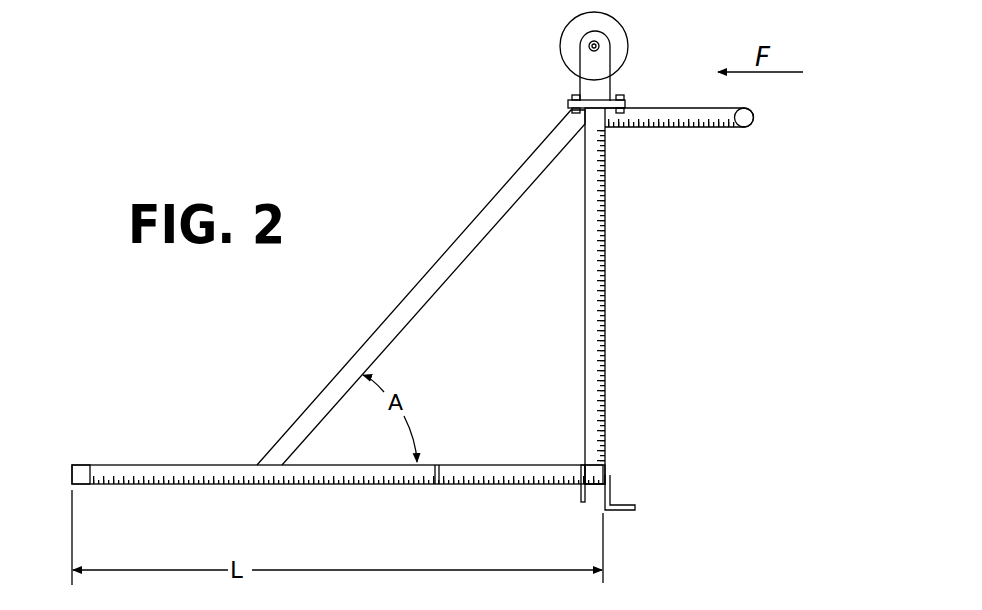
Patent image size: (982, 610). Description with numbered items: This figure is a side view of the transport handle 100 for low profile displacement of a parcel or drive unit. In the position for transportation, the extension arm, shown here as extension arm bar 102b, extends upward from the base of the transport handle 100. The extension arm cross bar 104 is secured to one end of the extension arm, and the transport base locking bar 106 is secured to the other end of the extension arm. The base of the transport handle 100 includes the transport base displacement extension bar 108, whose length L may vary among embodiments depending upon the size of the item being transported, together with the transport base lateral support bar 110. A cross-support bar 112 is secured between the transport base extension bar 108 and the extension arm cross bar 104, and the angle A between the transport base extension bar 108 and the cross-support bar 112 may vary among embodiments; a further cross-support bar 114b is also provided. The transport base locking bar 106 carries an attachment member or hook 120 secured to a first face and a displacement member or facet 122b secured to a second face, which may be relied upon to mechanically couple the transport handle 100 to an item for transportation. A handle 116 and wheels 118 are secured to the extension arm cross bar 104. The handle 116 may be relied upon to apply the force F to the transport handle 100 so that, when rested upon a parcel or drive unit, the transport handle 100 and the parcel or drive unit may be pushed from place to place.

The transport handle 100 is at (735, 473).
The extension arm bar 102b is at (592, 235).
The extension arm cross bar 104 is at (594, 117).
The transport base locking bar 106 is at (597, 472).
The transport base displacement extension bar 108 is at (315, 475).
The transport base lateral support bar 110 is at (75, 473).
The cross-support bar 112 is at (507, 200).
The cross-support bar 114b is at (500, 475).
The handle 116 is at (741, 118).
The wheels 118 is at (613, 40).
The attachment member or hook 120 is at (632, 510).
The displacement member or facet 122b is at (580, 490).